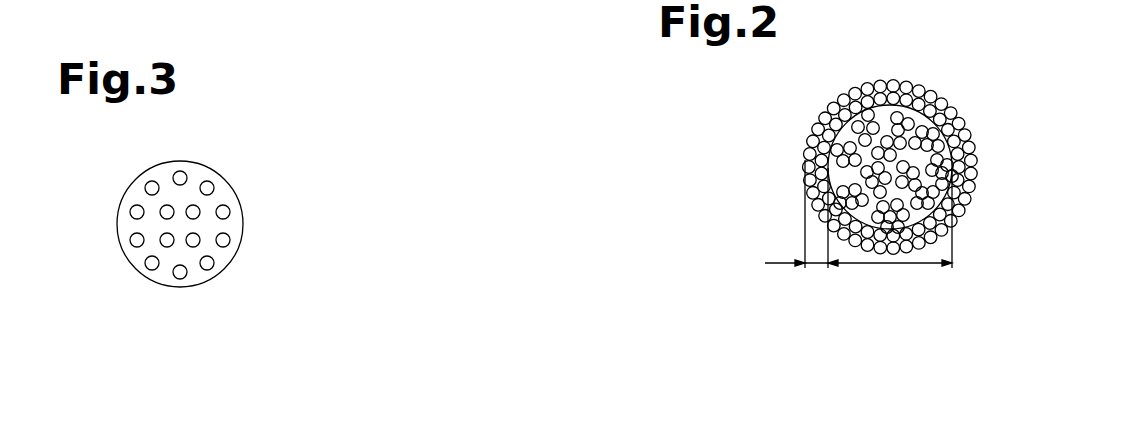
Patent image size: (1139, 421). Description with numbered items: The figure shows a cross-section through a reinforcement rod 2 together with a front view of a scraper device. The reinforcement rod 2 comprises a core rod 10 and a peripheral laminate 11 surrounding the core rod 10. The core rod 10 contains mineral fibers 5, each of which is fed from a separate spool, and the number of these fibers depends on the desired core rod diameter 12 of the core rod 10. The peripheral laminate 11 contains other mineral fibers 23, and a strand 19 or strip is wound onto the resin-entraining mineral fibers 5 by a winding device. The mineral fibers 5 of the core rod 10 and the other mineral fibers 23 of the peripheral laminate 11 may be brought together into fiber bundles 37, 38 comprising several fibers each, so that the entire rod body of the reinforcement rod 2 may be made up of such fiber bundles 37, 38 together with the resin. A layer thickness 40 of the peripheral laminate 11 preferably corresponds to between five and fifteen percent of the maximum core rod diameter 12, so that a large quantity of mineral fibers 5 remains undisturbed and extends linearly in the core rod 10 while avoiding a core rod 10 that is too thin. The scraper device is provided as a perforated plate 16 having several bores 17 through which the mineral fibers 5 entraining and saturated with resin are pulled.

In FIG. 2, the reinforcement rod 2 is at (1017, 88).
In FIG. 2, the mineral fiber 5 is at (847, 162).
In FIG. 2, the core rod 10 is at (925, 113).
In FIG. 2, the peripheral laminate 11 is at (978, 182).
In FIG. 2, the core rod diameter 12 is at (917, 267).
In FIG. 3, the perforated plate 16 is at (243, 190).
In FIG. 3, the bore 17 is at (187, 170).
In FIG. 2, the strand 19 is at (870, 90).
In FIG. 2, the other mineral fibers 23 is at (820, 117).
In FIG. 2, the fiber bundle 37 is at (895, 127).
In FIG. 2, the fiber bundle 38 is at (980, 130).
In FIG. 2, the layer thickness 40 is at (817, 265).